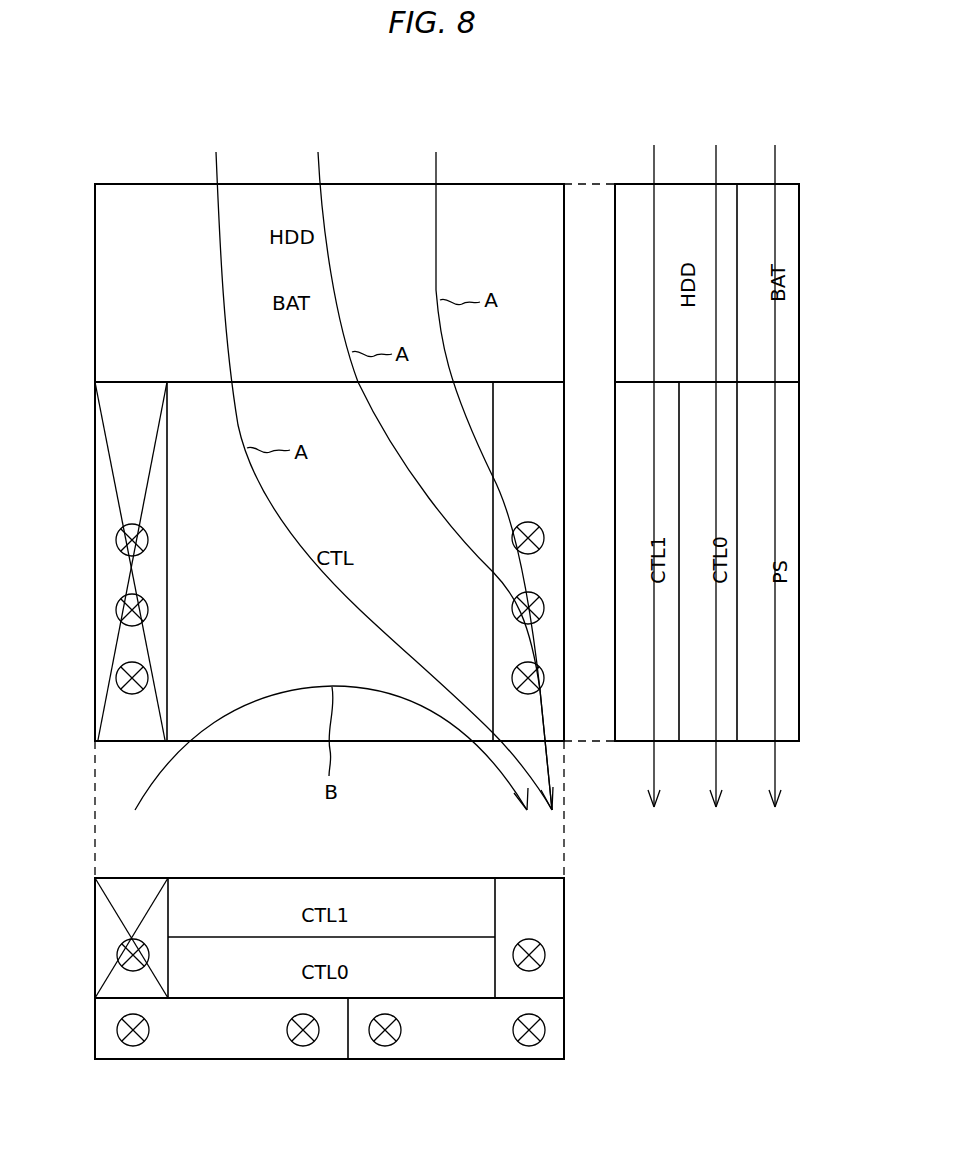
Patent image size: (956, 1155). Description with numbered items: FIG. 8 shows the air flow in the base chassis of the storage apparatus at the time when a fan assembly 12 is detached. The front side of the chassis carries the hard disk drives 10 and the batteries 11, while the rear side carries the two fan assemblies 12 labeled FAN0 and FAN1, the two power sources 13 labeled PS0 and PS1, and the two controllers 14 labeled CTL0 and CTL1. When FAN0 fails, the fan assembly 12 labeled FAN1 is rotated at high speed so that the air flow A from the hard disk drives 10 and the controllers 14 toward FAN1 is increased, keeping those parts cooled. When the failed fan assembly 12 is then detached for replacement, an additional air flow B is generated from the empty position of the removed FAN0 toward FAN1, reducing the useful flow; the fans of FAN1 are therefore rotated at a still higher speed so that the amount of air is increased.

The hard disk drive 10 is at (490, 200).
The battery 11 is at (757, 200).
The fan assembly 12 is at (108, 490).
The power source 13 is at (798, 488).
The controller 14 is at (232, 955).